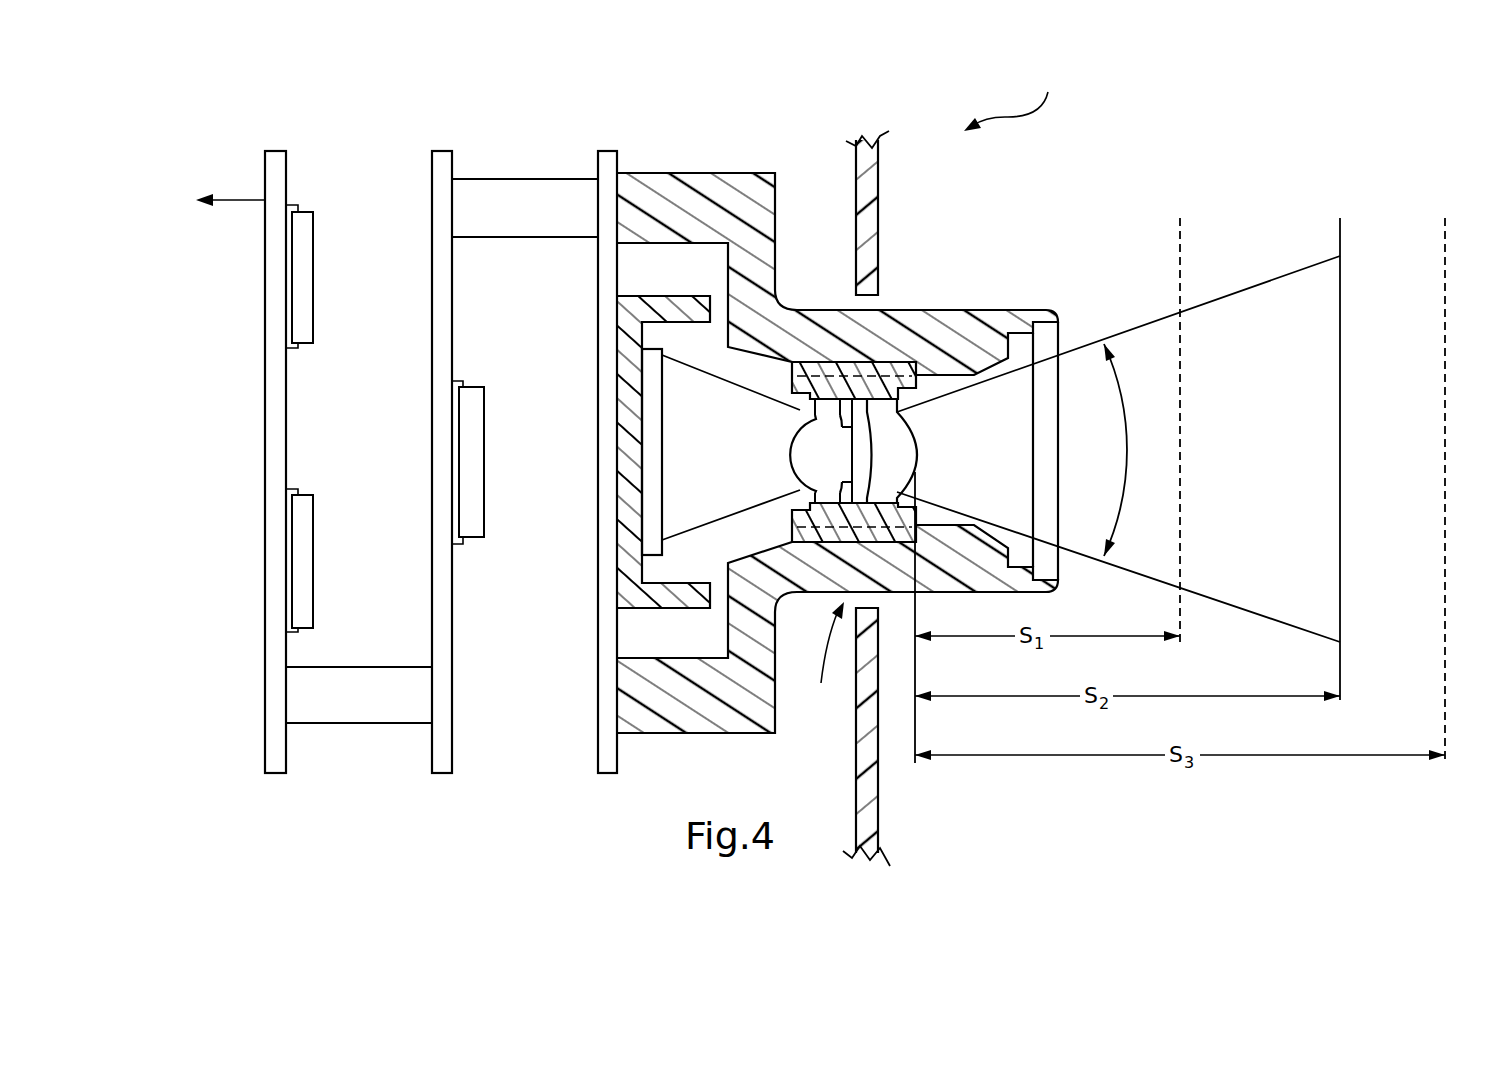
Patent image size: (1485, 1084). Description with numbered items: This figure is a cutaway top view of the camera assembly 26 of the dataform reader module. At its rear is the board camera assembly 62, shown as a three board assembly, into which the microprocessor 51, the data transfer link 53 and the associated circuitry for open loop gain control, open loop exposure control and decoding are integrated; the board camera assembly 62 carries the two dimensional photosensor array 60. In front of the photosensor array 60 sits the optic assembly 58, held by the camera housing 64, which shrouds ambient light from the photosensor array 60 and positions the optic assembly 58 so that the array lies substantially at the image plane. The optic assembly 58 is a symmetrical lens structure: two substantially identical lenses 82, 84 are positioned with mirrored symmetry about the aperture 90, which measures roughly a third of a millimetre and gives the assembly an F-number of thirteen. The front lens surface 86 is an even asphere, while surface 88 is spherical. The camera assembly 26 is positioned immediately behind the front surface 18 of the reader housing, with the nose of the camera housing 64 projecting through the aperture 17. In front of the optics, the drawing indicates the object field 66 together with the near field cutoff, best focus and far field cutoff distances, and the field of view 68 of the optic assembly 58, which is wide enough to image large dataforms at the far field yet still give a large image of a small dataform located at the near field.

The board camera assembly 62 is at (271, 150).
The data transfer link 53 is at (232, 201).
The microprocessor 51 is at (298, 558).
The camera housing 64 is at (807, 328).
The lens 82 is at (883, 407).
The lens 84 is at (830, 413).
The optic assembly 58 is at (885, 407).
The spherical surface 88 is at (860, 457).
The aperture 90 is at (838, 450).
The aspherical surface 86 is at (913, 431).
The photosensor array 60 is at (667, 507).
The front surface 18 is at (877, 830).
The aperture 17 is at (821, 656).
The camera assembly 26 is at (1014, 98).
The object field 66 is at (1341, 471).
The field of view 68 is at (1127, 456).